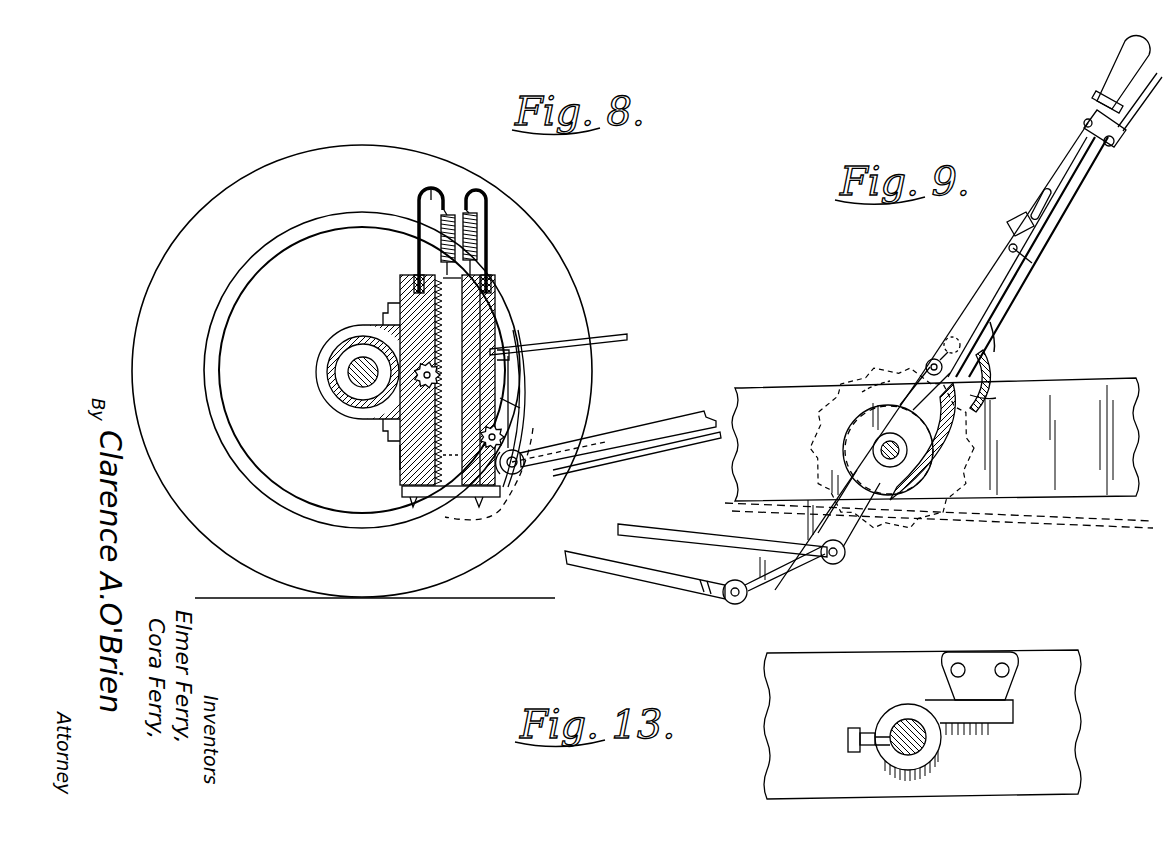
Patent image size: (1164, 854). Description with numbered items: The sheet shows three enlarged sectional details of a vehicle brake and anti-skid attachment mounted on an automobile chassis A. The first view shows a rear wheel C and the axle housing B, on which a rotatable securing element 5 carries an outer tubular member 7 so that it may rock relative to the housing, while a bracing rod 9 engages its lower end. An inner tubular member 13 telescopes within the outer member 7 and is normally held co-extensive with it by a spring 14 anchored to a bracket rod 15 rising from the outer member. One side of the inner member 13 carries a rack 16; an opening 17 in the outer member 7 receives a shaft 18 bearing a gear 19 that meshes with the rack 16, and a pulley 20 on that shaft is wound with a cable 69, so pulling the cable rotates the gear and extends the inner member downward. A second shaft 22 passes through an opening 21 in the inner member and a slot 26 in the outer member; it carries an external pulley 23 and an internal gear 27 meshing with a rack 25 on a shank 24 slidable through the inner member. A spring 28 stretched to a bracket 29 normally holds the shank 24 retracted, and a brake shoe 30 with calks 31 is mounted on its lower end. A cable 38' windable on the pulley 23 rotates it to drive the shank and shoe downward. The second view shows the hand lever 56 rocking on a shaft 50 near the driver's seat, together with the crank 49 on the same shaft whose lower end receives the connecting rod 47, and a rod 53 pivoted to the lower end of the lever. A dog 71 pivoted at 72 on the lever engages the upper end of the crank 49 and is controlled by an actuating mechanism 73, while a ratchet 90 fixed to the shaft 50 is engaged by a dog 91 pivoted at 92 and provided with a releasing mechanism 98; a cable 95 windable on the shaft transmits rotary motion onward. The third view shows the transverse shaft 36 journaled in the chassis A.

In FIG. 8, the rotatable securing element 5 is at (330, 342).
In FIG. 8, the outer tubular member 7 is at (397, 270).
In FIG. 8, the bracing rod 9 is at (667, 422).
In FIG. 8, the inner tubular member 13 is at (416, 280).
In FIG. 8, the spring 14 is at (468, 232).
In FIG. 8, the bracket rod 15 is at (487, 210).
In FIG. 8, the rack 16 is at (490, 307).
In FIG. 8, the opening 17 is at (515, 377).
In FIG. 8, the shaft 18 is at (517, 403).
In FIG. 8, the gear 19 is at (521, 418).
In FIG. 8, the pulley 20 is at (517, 437).
In FIG. 8, the opening 21 is at (439, 347).
In FIG. 8, the shaft 22 is at (449, 382).
In FIG. 8, the pulley 23 is at (453, 435).
In FIG. 8, the shank 24 is at (453, 289).
In FIG. 8, the rack 25 is at (440, 242).
In FIG. 8, the slot 26 is at (400, 453).
In FIG. 8, the gear 27 is at (512, 352).
In FIG. 8, the spring 28 is at (417, 206).
In FIG. 8, the bracket 29 is at (433, 192).
In FIG. 8, the brake shoe 30 is at (451, 505).
In FIG. 8, the calks 31 is at (485, 512).
In FIG. 8, the cable 38' is at (572, 330).
In FIG. 8, the cable 69 is at (688, 440).
In FIG. 8, the axle housing B is at (330, 373).
In FIG. 8, the rear wheel C is at (545, 267).
In FIG. 9, the automobile chassis A is at (1085, 387).
In FIG. 13, the automobile chassis A is at (1042, 660).
In FIG. 13, the shaft 36 is at (905, 712).
In FIG. 9, the connecting rod 47 is at (660, 580).
In FIG. 9, the crank 49 is at (800, 520).
In FIG. 9, the shaft 50 is at (883, 447).
In FIG. 9, the rod 53 is at (683, 530).
In FIG. 9, the lever 56 is at (975, 294).
In FIG. 9, the dog 71 is at (987, 377).
In FIG. 9, the pivot 72 is at (944, 345).
In FIG. 9, the actuating mechanism 73 is at (1060, 222).
In FIG. 9, the ratchet 90 is at (872, 378).
In FIG. 9, the dog 91 is at (980, 400).
In FIG. 9, the pivot 92 is at (928, 362).
In FIG. 9, the cable 95 is at (1047, 521).
In FIG. 9, the releasing mechanism 98 is at (1000, 308).